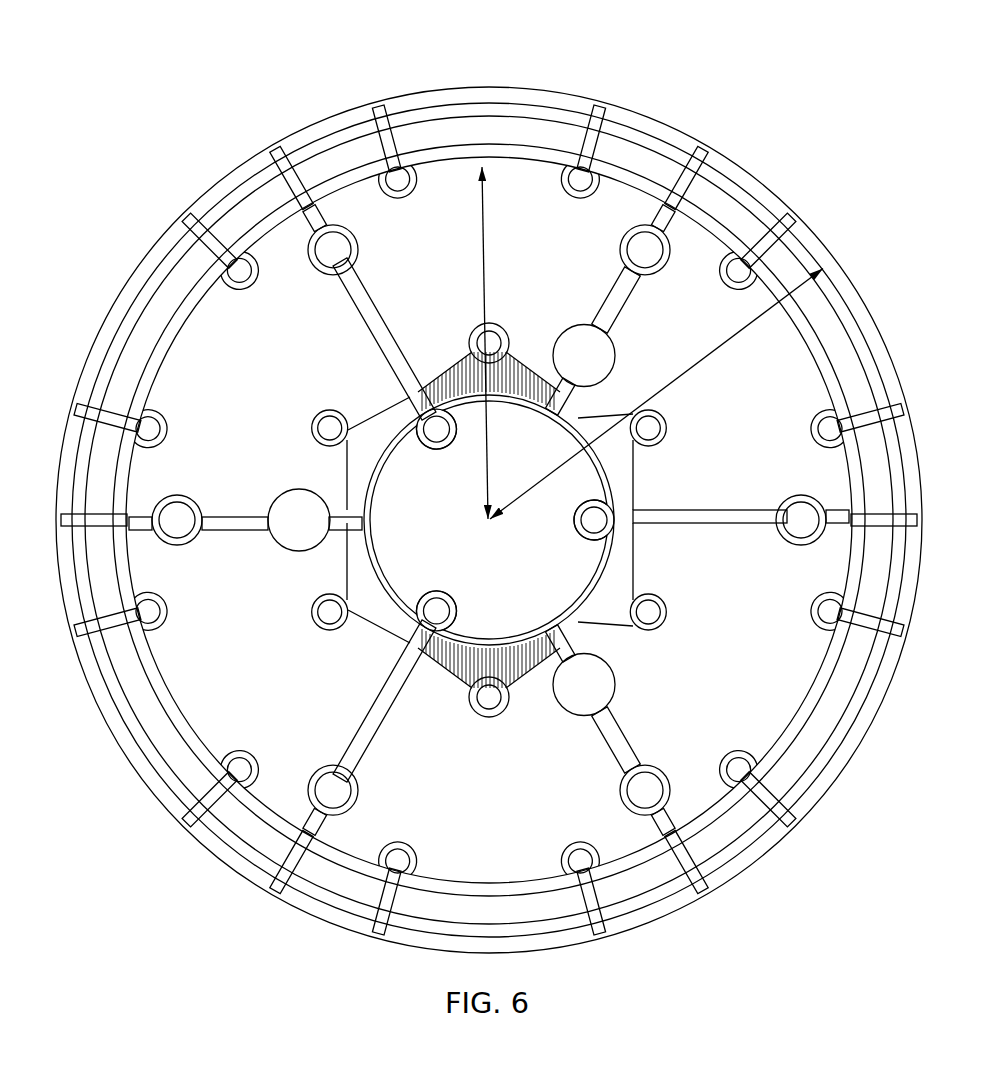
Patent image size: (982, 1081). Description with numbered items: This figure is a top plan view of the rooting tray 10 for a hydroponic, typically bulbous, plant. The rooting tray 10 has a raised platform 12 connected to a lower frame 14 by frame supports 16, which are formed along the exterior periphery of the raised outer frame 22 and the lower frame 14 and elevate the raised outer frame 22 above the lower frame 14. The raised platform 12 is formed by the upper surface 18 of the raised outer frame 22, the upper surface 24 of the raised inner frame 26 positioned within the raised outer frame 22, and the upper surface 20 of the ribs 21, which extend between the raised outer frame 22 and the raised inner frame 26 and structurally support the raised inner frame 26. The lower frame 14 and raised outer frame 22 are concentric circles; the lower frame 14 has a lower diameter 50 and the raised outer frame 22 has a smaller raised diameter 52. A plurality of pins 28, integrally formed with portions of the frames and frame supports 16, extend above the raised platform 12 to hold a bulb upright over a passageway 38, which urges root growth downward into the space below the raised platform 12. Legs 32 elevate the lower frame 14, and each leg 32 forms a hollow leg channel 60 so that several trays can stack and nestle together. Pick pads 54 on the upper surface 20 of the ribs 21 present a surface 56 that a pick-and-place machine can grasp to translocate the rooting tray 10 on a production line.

The rooting tray 10 is at (836, 100).
The raised platform 12 is at (360, 40).
The lower frame 14 is at (320, 925).
The frame support 16 is at (62, 522).
The upper surface of raised outer frame 18 is at (160, 347).
The upper surface of rib 20 is at (363, 300).
The rib 21 is at (390, 323).
The raised outer frame 22 is at (476, 860).
The upper surface of raised inner frame 24 is at (382, 428).
The raised inner frame 26 is at (507, 640).
The pin 28 is at (656, 422).
The leg 32 is at (180, 493).
The passageway 38 is at (222, 688).
The lower diameter 50 is at (723, 350).
The raised diameter 52 is at (491, 293).
The pick pad 54 is at (274, 545).
The surface of pick pad 56 is at (300, 487).
The leg channel 60 is at (643, 251).